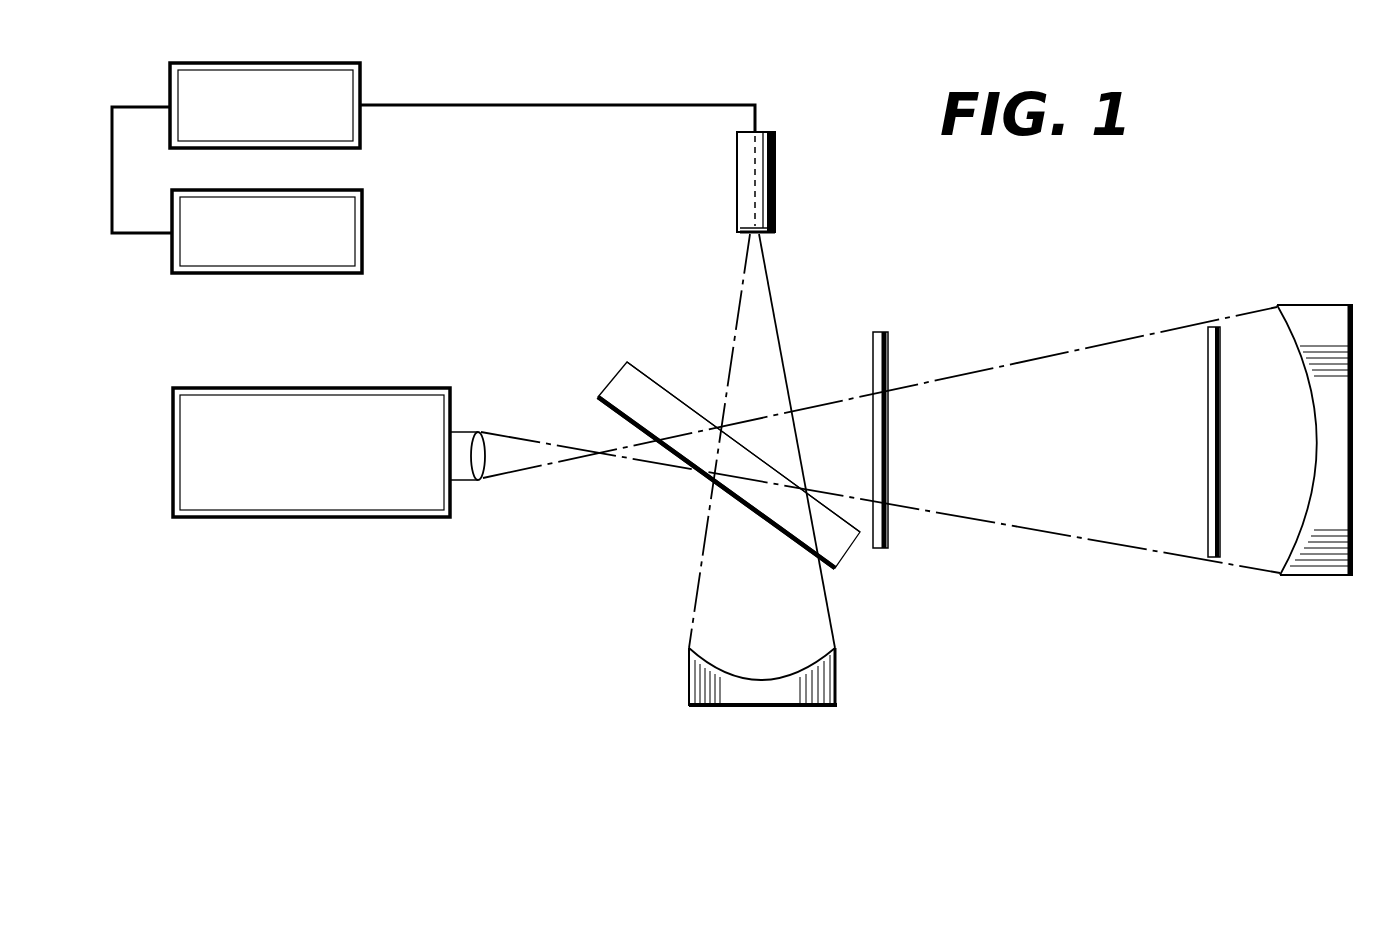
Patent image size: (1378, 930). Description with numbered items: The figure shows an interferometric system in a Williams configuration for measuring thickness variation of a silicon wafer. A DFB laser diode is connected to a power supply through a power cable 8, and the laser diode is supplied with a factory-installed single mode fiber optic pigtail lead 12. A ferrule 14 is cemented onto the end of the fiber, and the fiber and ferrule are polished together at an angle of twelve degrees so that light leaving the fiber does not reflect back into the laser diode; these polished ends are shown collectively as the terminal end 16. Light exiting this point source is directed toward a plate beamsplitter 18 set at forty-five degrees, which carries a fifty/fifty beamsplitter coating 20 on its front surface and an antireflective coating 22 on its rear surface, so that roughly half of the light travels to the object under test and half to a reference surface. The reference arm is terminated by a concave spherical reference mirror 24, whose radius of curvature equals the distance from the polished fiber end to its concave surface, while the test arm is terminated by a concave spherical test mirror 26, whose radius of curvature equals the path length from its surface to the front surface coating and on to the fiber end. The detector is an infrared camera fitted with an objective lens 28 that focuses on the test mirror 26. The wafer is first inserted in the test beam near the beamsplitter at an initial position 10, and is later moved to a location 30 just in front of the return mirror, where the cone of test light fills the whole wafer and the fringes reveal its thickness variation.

The power cable 8 is at (112, 170).
The initial position of the wafer 10 is at (889, 356).
The single mode fiber optic pigtail lead 12 is at (493, 104).
The ferrule 14 is at (774, 183).
The polished ends of the fiber and ferrule 16 is at (738, 232).
The beamsplitter 18 is at (629, 388).
The beamsplitter coating 20 is at (664, 380).
The antireflective coating 22 is at (774, 531).
The concave spherical reference mirror 24 is at (700, 680).
The concave spherical test mirror 26 is at (1312, 318).
The objective lens 28 is at (489, 470).
The location of the wafer near the return mirror 30 is at (1208, 370).